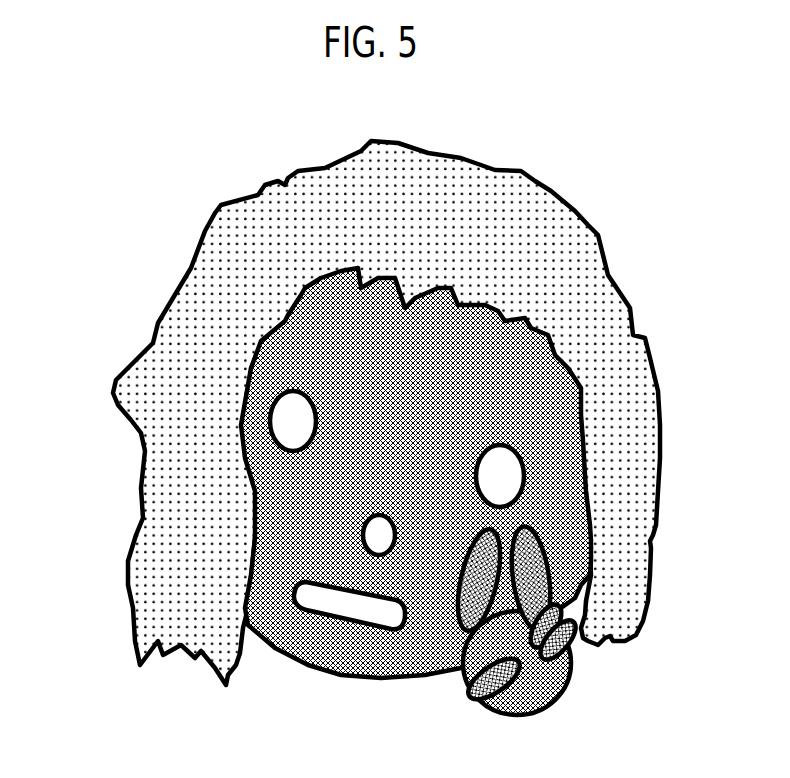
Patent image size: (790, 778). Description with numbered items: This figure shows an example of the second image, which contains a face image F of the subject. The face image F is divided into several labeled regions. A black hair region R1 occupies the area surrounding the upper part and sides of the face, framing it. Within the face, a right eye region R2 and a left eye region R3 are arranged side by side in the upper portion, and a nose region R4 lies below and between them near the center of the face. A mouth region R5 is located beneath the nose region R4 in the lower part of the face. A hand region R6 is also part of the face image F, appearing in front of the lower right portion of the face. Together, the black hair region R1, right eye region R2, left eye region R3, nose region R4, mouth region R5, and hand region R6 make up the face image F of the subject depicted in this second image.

The face image F is at (385, 431).
The black hair region R1 is at (402, 153).
The right eye region R2 is at (273, 416).
The left eye region R3 is at (503, 470).
The nose region R4 is at (382, 658).
The mouth region R5 is at (342, 600).
The hand region R6 is at (507, 708).